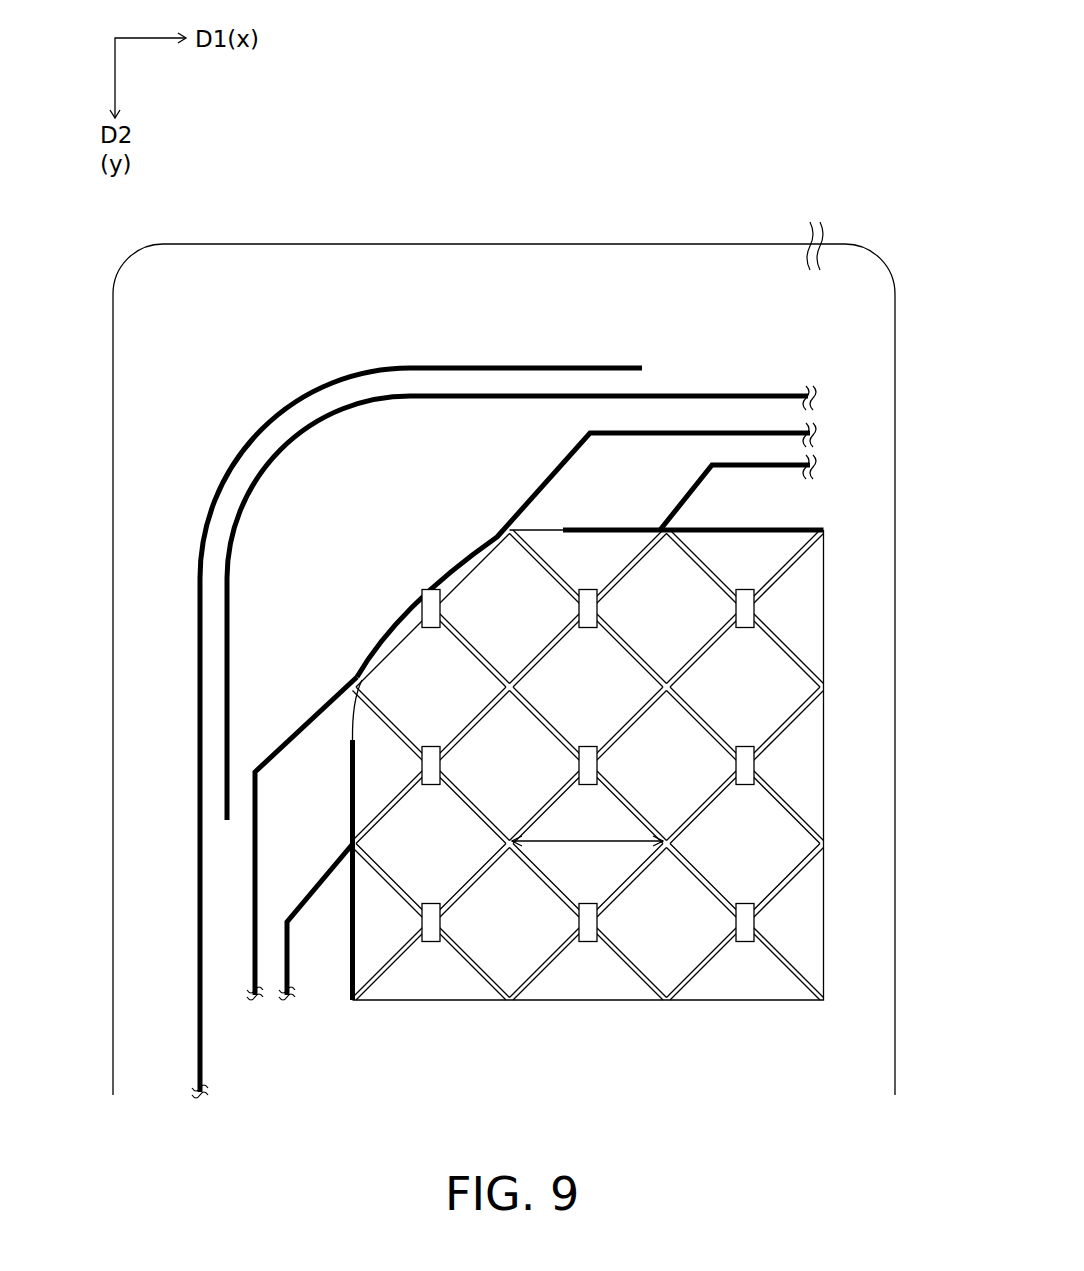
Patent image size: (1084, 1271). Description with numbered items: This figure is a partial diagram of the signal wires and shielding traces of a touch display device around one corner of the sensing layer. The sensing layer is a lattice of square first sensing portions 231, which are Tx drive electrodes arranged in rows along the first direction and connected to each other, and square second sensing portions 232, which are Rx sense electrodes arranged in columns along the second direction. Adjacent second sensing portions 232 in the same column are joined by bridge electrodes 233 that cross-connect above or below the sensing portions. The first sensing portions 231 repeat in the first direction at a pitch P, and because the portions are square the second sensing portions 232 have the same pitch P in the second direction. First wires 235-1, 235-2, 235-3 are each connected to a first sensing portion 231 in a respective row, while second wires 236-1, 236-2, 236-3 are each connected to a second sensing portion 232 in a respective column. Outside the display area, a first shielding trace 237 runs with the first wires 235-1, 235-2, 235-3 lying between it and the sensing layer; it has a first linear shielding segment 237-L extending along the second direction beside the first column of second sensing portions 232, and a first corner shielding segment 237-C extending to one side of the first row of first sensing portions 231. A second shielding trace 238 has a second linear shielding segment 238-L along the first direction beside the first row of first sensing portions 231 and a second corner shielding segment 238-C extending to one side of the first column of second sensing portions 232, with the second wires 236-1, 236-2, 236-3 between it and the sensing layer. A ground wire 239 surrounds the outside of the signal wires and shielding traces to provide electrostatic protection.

The first sensing portion 231 is at (818, 935).
The second sensing portion 232 is at (766, 990).
The bridge electrode 233 is at (741, 757).
The first wire 235-1 is at (284, 856).
The first wire 235-2 is at (287, 988).
The first wire 235-3 is at (349, 923).
The second wire 236-1 is at (625, 550).
The second wire 236-2 is at (776, 492).
The second wire 236-3 is at (744, 520).
The first shielding trace 237 is at (181, 350).
The first corner shielding segment 237-C is at (305, 403).
The first linear shielding segment 237-L is at (197, 643).
The second shielding trace 238 is at (578, 288).
The second corner shielding segment 238-C is at (305, 459).
The second linear shielding segment 238-L is at (448, 384).
The ground wire 239 is at (214, 232).
The pitch P is at (587, 853).